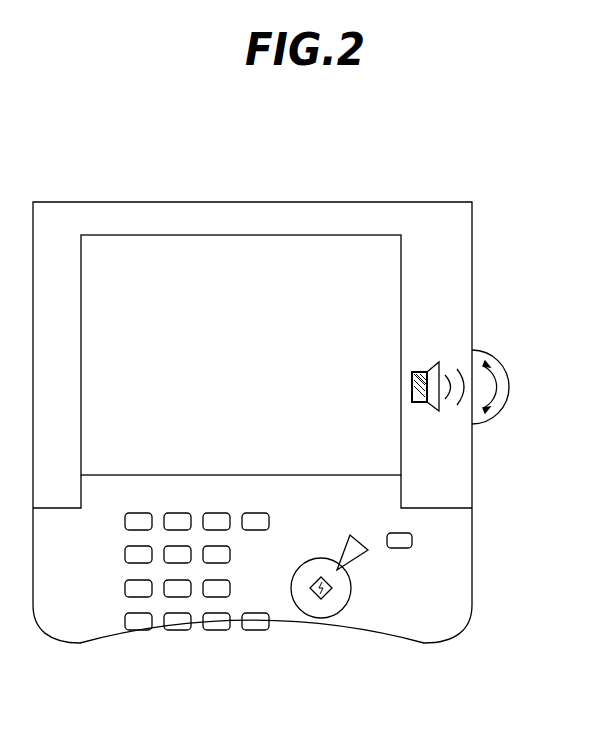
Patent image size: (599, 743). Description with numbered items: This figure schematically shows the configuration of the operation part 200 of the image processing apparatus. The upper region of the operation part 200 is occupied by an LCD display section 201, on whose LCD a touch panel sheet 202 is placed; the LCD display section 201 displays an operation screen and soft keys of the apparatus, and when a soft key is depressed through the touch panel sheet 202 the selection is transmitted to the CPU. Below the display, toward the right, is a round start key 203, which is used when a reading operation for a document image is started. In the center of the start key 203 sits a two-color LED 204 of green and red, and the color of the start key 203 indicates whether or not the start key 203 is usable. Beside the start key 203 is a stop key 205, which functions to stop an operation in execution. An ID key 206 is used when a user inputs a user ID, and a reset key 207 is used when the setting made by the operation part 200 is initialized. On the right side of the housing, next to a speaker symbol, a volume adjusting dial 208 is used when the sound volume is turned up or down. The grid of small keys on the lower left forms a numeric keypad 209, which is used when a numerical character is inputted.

The operation part 200 is at (383, 203).
The LCD display section 201 is at (401, 256).
The touch panel sheet 202 is at (393, 290).
The start key 203 is at (345, 608).
The two-color LED 204 is at (315, 597).
The stop key 205 is at (350, 535).
The ID key 206 is at (253, 630).
The reset key 207 is at (412, 540).
The volume adjusting dial 208 is at (480, 351).
The numeric keypad 209 is at (164, 650).